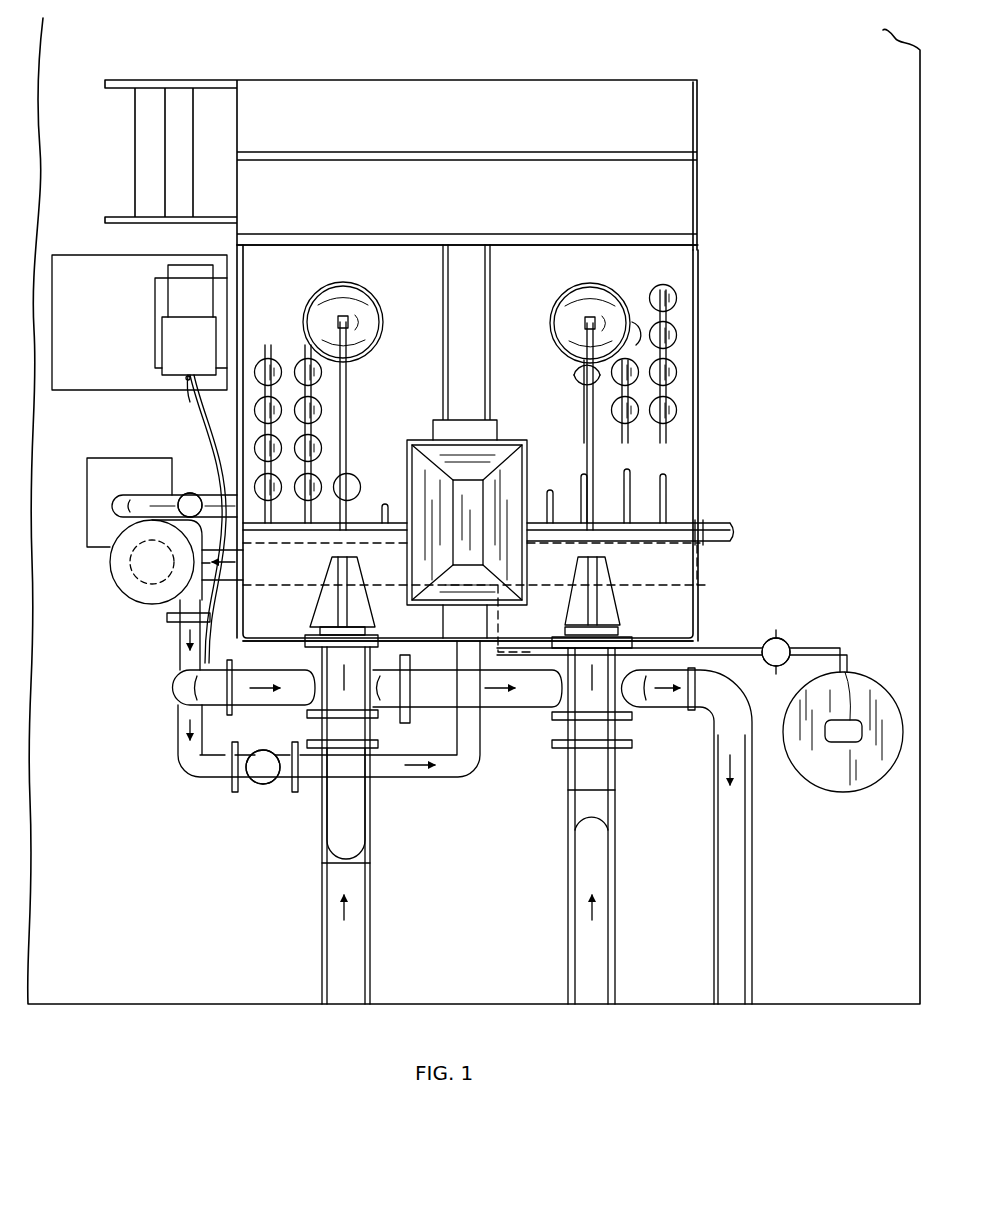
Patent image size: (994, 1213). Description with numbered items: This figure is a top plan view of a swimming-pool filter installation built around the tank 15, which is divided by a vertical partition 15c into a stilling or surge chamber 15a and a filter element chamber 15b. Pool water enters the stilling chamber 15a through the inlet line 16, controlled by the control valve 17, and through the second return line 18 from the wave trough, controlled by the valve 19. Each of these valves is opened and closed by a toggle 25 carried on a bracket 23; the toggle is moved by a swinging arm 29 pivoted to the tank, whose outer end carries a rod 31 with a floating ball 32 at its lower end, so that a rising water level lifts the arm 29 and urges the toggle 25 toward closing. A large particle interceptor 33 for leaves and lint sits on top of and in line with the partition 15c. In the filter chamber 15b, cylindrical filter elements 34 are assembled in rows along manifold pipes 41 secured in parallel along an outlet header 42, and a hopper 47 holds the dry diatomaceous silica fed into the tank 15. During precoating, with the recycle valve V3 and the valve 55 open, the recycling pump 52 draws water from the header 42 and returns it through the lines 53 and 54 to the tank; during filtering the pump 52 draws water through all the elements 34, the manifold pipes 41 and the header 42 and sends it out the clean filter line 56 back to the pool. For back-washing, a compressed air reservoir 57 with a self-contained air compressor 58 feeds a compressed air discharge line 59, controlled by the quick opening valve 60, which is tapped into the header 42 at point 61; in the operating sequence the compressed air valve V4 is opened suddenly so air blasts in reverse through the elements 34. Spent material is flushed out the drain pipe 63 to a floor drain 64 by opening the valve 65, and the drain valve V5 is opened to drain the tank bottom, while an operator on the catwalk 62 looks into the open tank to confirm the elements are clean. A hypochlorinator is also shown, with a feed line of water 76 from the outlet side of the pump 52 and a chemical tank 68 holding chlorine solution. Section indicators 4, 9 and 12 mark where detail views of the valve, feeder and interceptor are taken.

The tank 15 is at (697, 325).
The stilling or surge chamber 15a is at (675, 622).
The filter element chamber 15b is at (688, 268).
The vertical partition 15c is at (675, 520).
The inlet line 16 is at (362, 888).
The control valve 17 is at (330, 620).
The second return line 18 is at (610, 888).
The valve 19 is at (610, 625).
The bracket 23 is at (358, 585).
The toggle 25 is at (340, 577).
The swinging arm 29 is at (346, 410).
The rod 31 is at (340, 322).
The floating ball 32 is at (360, 308).
The large particle interceptor 33 is at (383, 507).
The filter elements 34 is at (262, 368).
The manifold pipes 41 is at (310, 427).
The outlet header 42 is at (215, 578).
The hopper 47 is at (497, 437).
The recycling pump 52 is at (135, 590).
The line 53 is at (178, 643).
The line 54 is at (440, 775).
The valve 55 is at (255, 785).
The clean filter line 56 is at (740, 843).
The compressed air reservoir 57 is at (865, 778).
The air compressor 58 is at (855, 720).
The compressed air discharge line 59 is at (823, 650).
The quick opening valve 60 is at (778, 640).
The tap point 61 is at (465, 621).
The catwalk 62 is at (683, 193).
The drain pipe 63 is at (200, 505).
The floor drain 64 is at (115, 440).
The valve 65 is at (190, 402).
The chemical tank 68 is at (92, 262).
The feed line of water 76 is at (205, 360).
The recycle valve V3 is at (270, 785).
The compressed air valve V4 is at (644, 662).
The drain valve V5 is at (190, 495).
The section line 4 is at (537, 550).
The section line 9 is at (522, 437).
The section line 12 is at (490, 553).